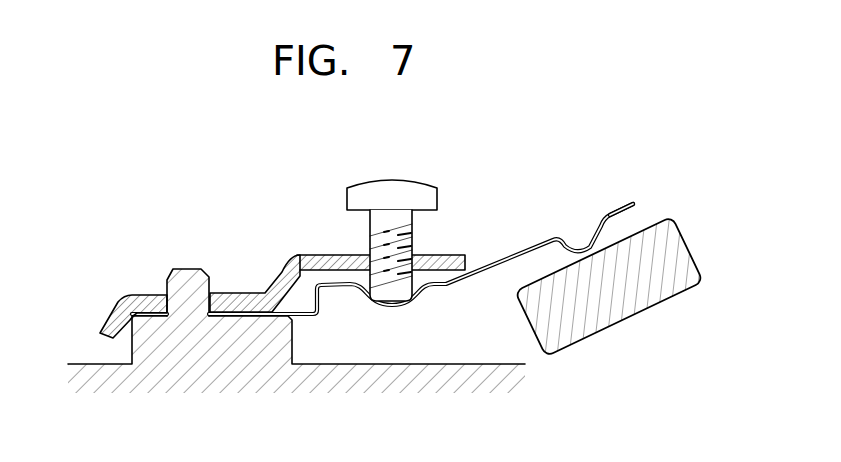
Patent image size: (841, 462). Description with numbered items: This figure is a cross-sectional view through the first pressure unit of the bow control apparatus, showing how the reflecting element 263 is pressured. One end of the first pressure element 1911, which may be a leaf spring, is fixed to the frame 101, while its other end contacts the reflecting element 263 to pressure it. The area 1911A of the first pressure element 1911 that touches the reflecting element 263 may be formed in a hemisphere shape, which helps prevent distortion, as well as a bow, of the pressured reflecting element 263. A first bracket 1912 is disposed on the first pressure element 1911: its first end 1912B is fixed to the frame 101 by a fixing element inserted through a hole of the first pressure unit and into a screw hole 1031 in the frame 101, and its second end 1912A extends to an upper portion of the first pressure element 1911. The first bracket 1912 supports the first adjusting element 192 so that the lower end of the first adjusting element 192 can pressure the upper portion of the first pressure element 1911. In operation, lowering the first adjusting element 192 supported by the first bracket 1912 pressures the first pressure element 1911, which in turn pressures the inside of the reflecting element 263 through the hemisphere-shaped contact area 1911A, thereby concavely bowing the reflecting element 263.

The frame 101 is at (468, 366).
The screw hole 1031 is at (188, 272).
The first adjusting element 192 is at (390, 184).
The first pressure element 1911 is at (390, 232).
The contact area of first pressure element 1911A is at (618, 215).
The first bracket 1912 is at (282, 261).
The second end of first bracket 1912A is at (323, 257).
The first end of first bracket 1912B is at (148, 297).
The reflecting element 263 is at (620, 313).